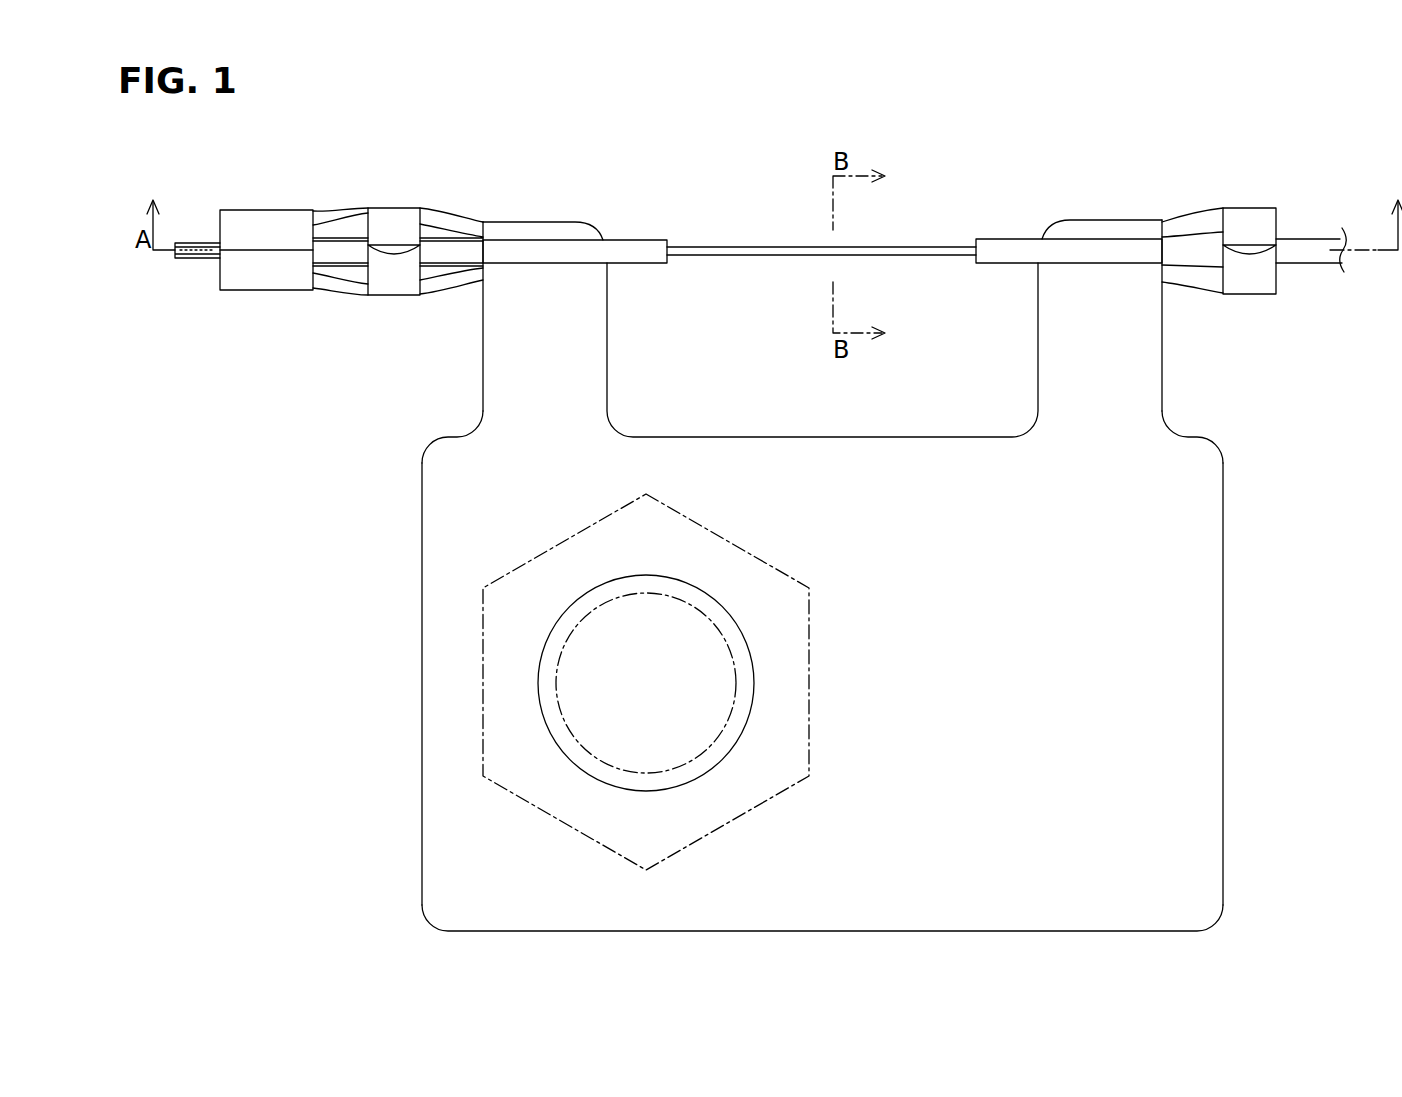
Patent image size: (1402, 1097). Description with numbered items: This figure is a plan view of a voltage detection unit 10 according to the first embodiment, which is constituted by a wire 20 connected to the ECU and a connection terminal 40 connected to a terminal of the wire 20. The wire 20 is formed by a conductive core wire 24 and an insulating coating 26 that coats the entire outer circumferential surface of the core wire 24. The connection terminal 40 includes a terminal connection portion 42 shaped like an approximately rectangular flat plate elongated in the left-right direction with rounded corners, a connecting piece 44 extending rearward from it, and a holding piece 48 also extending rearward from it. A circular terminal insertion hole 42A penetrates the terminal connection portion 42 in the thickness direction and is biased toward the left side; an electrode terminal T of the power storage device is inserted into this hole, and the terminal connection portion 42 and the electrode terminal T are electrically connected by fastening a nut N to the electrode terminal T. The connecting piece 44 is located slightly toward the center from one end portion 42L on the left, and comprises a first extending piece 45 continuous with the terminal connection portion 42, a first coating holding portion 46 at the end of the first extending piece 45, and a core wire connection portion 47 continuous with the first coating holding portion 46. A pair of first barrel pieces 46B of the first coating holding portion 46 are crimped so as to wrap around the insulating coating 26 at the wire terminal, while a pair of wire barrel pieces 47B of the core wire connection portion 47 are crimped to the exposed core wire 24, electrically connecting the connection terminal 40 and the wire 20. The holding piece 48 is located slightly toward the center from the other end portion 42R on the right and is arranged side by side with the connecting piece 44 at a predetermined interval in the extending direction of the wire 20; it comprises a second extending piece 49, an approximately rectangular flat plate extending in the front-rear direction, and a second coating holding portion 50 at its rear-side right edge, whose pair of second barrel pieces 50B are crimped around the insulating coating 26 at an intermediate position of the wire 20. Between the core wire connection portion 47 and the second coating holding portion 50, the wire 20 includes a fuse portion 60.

The voltage detection unit 10 is at (358, 495).
The wire 20 is at (1307, 255).
The core wire 24 is at (189, 243).
The insulating coating 26 is at (543, 245).
The connection terminal 40 is at (855, 575).
The terminal connection portion 42 is at (831, 671).
The terminal insertion hole 42A is at (540, 684).
The one end portion 42L is at (482, 522).
The another end portion 42R is at (1178, 735).
The connecting piece 44 is at (430, 332).
The first extending piece 45 is at (575, 333).
The first coating holding portion 46 is at (405, 248).
The first barrel pieces 46B is at (395, 225).
The core wire connection portion 47 is at (238, 297).
The wire barrel pieces 47B is at (235, 275).
The holding piece 48 is at (1207, 348).
The second extending piece 49 is at (1075, 333).
The second coating holding portion 50 is at (1260, 221).
The second barrel pieces 50B is at (1239, 275).
The fuse portion 60 is at (746, 247).
The electrode terminal T is at (578, 745).
The nut N is at (583, 840).